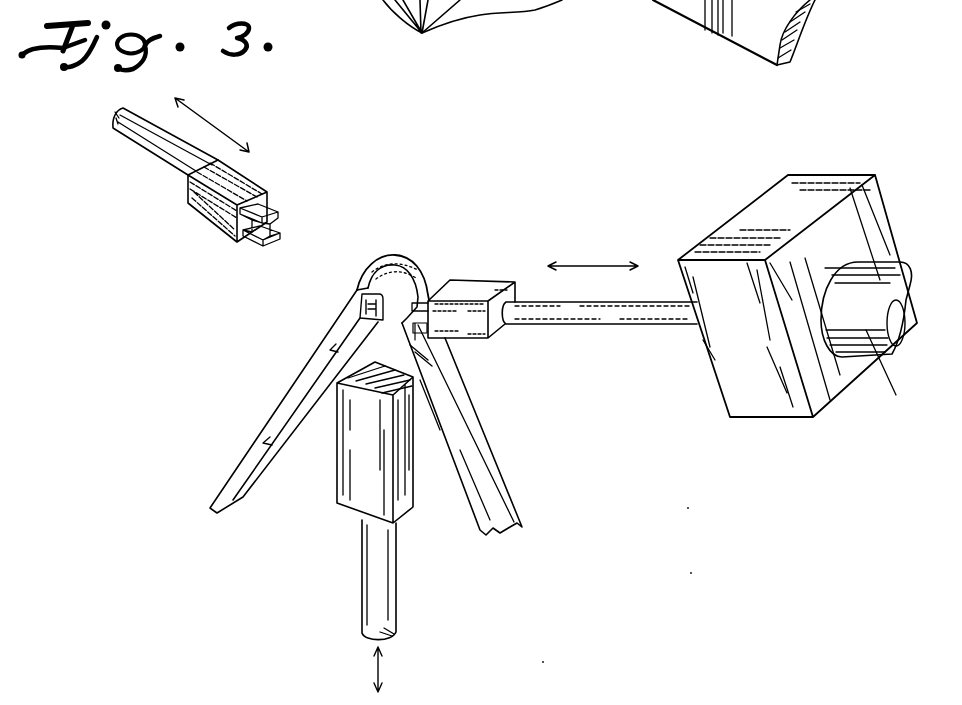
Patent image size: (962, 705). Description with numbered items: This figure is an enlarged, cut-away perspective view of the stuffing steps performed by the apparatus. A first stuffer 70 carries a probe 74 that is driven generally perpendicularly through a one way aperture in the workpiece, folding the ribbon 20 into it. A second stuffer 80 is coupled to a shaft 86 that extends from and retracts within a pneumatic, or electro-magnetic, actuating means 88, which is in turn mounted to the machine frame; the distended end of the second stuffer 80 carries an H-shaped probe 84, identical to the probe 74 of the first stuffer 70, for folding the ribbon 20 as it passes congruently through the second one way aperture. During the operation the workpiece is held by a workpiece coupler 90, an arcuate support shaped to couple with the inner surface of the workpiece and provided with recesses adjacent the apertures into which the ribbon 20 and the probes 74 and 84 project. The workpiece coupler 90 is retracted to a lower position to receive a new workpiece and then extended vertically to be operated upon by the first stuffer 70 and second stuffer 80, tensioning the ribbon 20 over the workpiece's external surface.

The ribbon 20 is at (483, 467).
The first stuffer 70 is at (216, 207).
The probe 74 is at (270, 213).
The second stuffer 80 is at (469, 289).
The H-shaped probe 84 is at (424, 282).
The shaft 86 is at (552, 310).
The pneumatic actuating means 88 is at (758, 333).
The workpiece coupler 90 is at (384, 468).